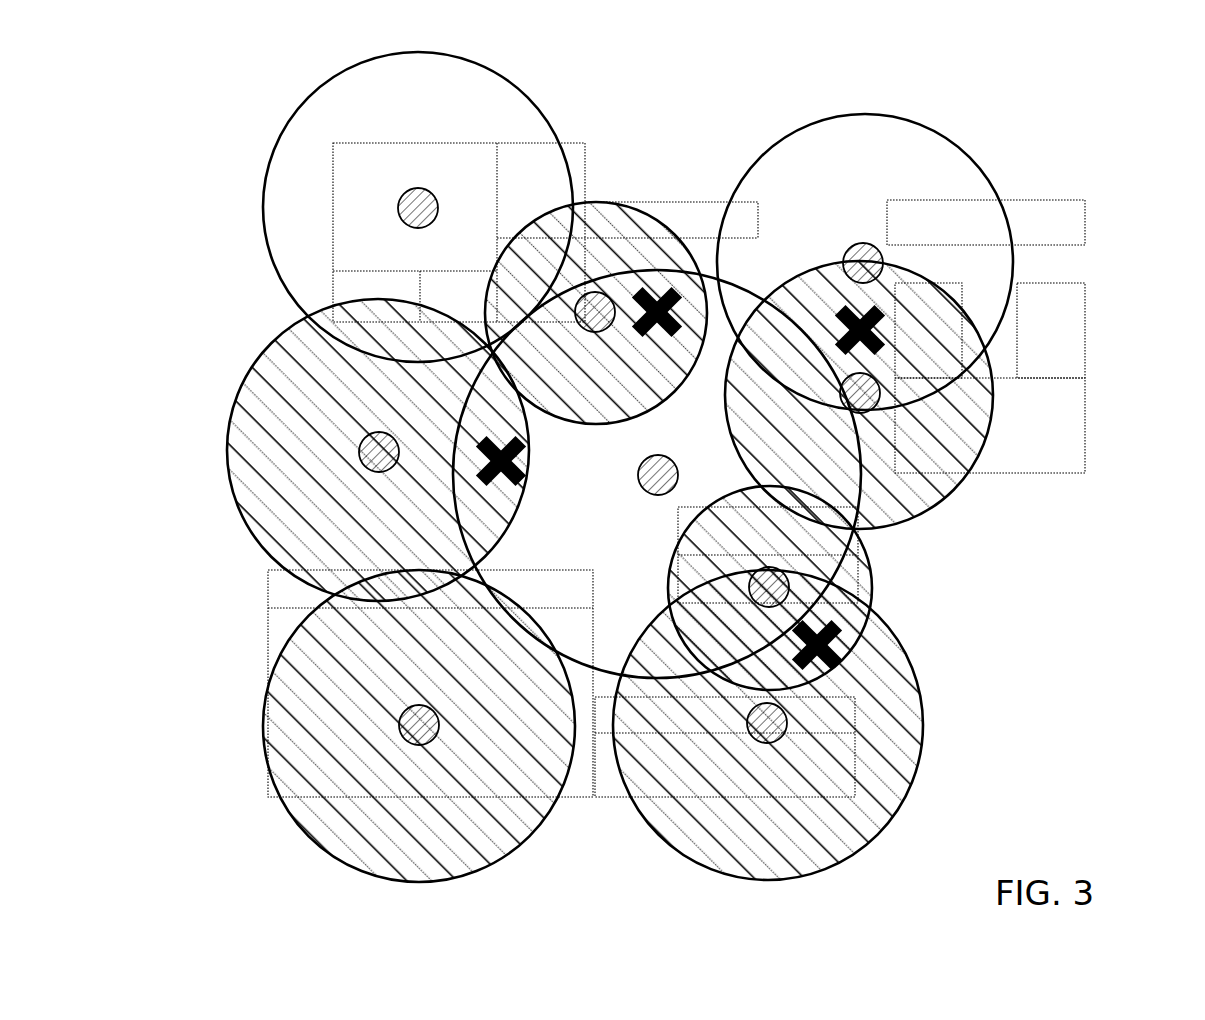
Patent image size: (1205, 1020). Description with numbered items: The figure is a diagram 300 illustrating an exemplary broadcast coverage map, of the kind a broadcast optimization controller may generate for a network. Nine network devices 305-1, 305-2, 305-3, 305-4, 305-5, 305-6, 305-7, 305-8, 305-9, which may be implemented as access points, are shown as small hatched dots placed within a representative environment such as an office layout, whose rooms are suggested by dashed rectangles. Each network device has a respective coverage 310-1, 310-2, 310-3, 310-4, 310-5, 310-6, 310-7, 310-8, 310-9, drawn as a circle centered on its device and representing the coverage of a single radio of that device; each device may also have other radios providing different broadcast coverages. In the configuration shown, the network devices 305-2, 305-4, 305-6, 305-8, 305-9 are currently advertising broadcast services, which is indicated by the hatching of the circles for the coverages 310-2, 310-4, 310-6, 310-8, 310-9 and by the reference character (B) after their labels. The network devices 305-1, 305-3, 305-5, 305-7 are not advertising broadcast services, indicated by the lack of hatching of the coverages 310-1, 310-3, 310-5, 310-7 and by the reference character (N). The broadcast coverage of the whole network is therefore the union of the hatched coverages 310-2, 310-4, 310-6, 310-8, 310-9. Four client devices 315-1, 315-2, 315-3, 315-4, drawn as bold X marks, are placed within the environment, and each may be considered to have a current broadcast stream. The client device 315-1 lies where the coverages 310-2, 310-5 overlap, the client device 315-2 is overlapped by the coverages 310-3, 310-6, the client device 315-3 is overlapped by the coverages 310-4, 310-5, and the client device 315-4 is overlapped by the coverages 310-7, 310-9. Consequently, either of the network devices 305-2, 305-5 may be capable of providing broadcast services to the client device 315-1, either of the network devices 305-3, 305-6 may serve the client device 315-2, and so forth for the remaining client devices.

The diagram 300 is at (1090, 73).
The coverage 310-1 is at (522, 92).
The coverage 310-2 is at (651, 216).
The coverage 310-3 is at (987, 181).
The coverage 310-4 is at (232, 412).
The coverage 310-5 is at (868, 563).
The coverage 310-6 is at (963, 481).
The coverage 310-7 is at (872, 603).
The coverage 310-8 is at (497, 858).
The coverage 310-9 is at (877, 838).
The network device 305-1 is at (423, 188).
The network device 305-2 is at (595, 291).
The network device 305-3 is at (856, 244).
The network device 305-4 is at (360, 451).
The network device 305-5 is at (642, 492).
The network device 305-6 is at (876, 407).
The network device 305-7 is at (790, 587).
The network device 305-8 is at (440, 727).
The network device 305-9 is at (788, 725).
The client device 315-1 is at (672, 315).
The client device 315-2 is at (883, 329).
The client device 315-3 is at (524, 462).
The client device 315-4 is at (842, 648).